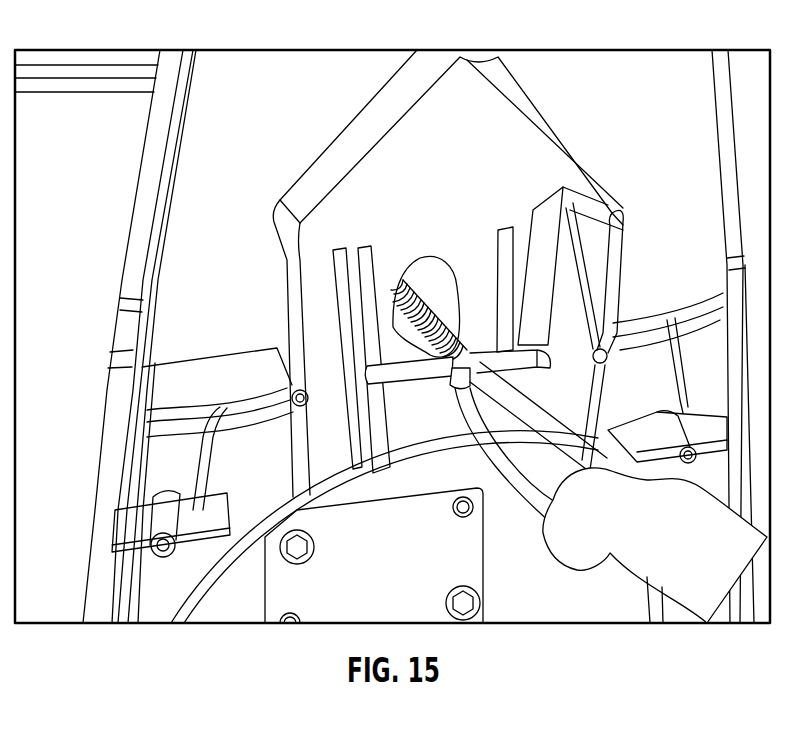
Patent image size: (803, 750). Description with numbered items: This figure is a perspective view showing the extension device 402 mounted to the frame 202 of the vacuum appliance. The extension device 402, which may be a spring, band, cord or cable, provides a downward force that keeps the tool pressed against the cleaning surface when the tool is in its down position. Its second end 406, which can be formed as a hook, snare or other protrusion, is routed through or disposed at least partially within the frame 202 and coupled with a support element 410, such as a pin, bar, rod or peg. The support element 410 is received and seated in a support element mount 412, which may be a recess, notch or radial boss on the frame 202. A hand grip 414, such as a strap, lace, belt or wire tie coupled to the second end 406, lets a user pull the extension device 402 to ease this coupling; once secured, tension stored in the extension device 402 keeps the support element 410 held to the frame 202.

The frame 202 is at (283, 258).
The extension device 402 is at (443, 270).
The second end 406 is at (472, 350).
The support element 410 is at (437, 375).
The support element mount 412 is at (572, 345).
The hand grip 414 is at (585, 455).